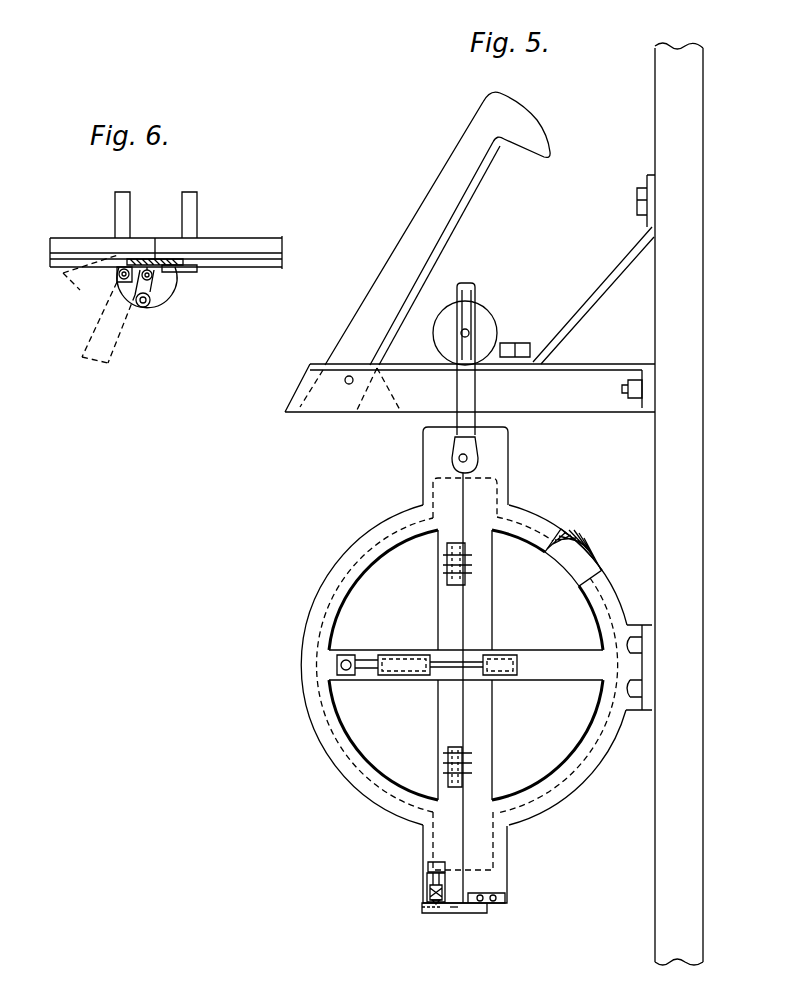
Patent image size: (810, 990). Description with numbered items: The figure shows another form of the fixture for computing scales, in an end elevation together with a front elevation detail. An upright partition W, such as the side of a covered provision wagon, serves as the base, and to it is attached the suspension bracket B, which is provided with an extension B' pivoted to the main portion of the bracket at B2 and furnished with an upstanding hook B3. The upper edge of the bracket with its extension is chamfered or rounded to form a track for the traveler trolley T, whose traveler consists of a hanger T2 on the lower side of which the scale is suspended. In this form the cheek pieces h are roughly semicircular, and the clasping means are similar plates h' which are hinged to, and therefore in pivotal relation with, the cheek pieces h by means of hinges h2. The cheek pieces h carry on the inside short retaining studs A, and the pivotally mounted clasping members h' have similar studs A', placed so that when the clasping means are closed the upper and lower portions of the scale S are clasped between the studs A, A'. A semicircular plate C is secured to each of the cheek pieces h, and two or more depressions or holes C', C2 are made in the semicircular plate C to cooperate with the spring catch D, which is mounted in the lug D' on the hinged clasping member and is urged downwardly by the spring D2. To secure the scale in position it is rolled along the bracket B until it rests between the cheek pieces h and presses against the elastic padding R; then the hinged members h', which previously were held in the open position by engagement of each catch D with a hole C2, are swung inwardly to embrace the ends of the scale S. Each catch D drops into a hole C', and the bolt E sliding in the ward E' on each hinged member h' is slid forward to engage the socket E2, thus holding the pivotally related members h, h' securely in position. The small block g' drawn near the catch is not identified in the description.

In FIG. 5, the upright partition W is at (690, 760).
In FIG. 5, the suspension bracket B is at (470, 388).
In FIG. 5, the extension B' is at (437, 228).
In FIG. 5, the pivot B2 is at (349, 384).
In FIG. 5, the upstanding hook B3 is at (508, 146).
In FIG. 5, the traveler trolley T is at (493, 324).
In FIG. 5, the hanger T2 is at (476, 284).
In FIG. 5, the cheek pieces h is at (451, 665).
In FIG. 6, the cheek pieces h is at (166, 274).
In FIG. 6, the clasping plates h' is at (105, 292).
In FIG. 5, the hinges h2 is at (450, 550).
In FIG. 5, the elastic padding R is at (586, 560).
In FIG. 5, the scale S is at (466, 665).
In FIG. 5, the bolt E is at (357, 691).
In FIG. 5, the ward E' is at (430, 705).
In FIG. 5, the socket E2 is at (507, 675).
In FIG. 5, the block g' is at (411, 854).
In FIG. 5, the spring catch D is at (390, 880).
In FIG. 6, the spring catch D is at (98, 299).
In FIG. 5, the lug D' is at (388, 899).
In FIG. 5, the spring D2 is at (427, 893).
In FIG. 6, the spring D2 is at (125, 283).
In FIG. 5, the semicircular plate C is at (467, 921).
In FIG. 6, the semicircular plate C is at (160, 296).
In FIG. 5, the hole C' is at (407, 936).
In FIG. 5, the hole C2 is at (453, 912).
In FIG. 6, the hole C2 is at (146, 307).
In FIG. 6, the retaining studs A is at (204, 215).
In FIG. 6, the studs A' is at (97, 215).